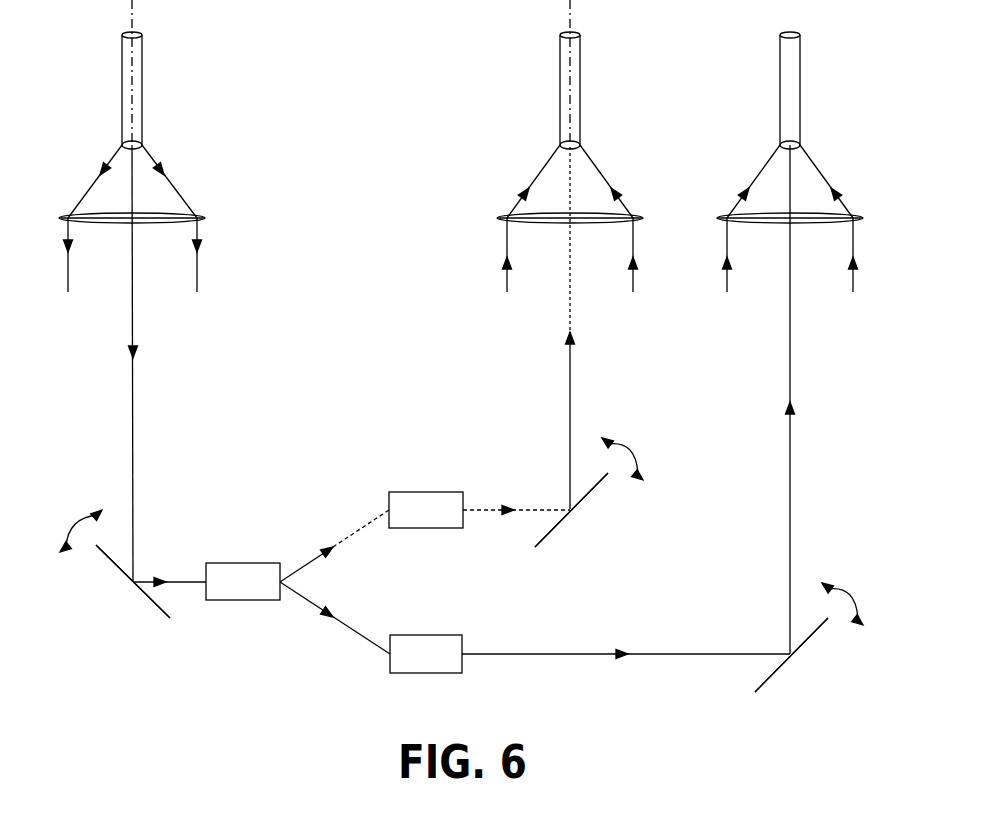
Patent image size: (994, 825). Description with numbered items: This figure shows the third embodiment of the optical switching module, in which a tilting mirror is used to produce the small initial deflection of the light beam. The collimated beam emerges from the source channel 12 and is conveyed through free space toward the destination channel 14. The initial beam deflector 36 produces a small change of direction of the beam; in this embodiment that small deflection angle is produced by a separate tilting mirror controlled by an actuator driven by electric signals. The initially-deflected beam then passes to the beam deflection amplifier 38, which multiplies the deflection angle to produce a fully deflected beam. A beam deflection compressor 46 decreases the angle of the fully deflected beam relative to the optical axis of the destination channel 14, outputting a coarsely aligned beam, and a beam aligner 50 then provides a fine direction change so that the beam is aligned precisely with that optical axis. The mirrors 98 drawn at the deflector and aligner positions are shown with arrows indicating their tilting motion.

The source channel 12 is at (86, 104).
The destination channel 14 is at (524, 96).
The initial beam deflector 36 is at (53, 599).
The beam deflection amplifier 38 is at (223, 563).
The beam deflection compressor 46 is at (417, 491).
The beam aligner 50 is at (646, 524).
The tiltable mirror 98 is at (150, 599).